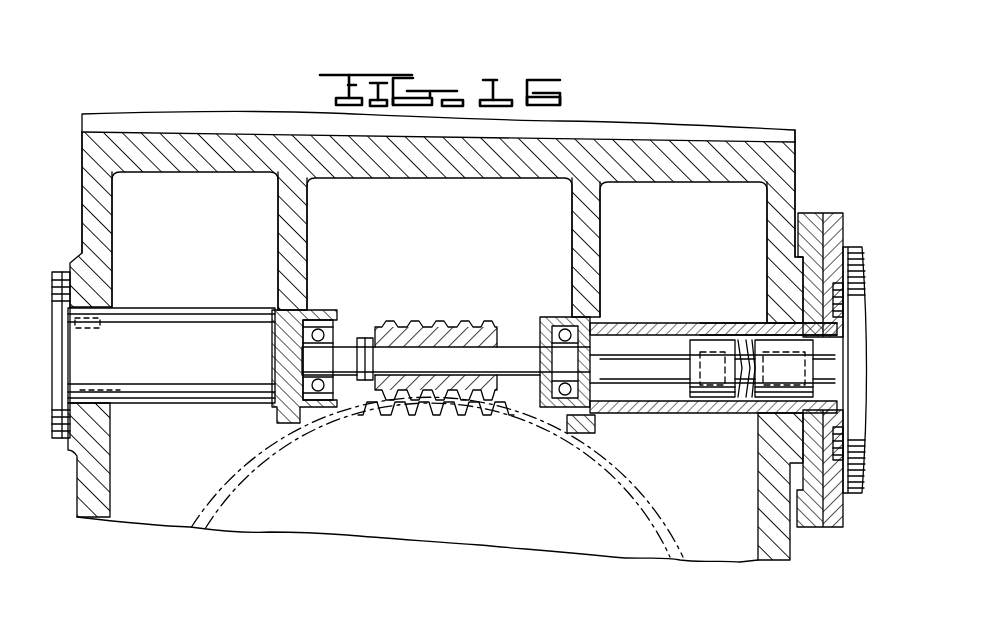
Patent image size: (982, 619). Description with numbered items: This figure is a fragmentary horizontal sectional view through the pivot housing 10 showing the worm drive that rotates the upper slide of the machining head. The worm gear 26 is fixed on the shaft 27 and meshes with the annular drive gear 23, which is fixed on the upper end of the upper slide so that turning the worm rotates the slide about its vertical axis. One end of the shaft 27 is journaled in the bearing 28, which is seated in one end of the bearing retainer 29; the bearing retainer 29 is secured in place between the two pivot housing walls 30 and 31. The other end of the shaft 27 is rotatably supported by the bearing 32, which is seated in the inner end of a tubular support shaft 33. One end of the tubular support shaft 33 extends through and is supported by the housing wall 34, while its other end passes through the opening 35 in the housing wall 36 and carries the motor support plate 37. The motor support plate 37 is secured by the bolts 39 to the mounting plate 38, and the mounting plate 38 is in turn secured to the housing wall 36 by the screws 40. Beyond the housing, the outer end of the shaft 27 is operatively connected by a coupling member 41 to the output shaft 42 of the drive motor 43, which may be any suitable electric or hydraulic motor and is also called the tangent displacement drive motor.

The pivot housing 10 is at (73, 480).
The annular drive gear 23 is at (650, 500).
The worm gear 26 is at (427, 319).
The shaft 27 is at (342, 350).
The bearing 28 is at (315, 327).
The bearing retainer 29 is at (178, 388).
The pivot housing wall 30 is at (103, 282).
The pivot housing wall 31 is at (288, 255).
The bearing 32 is at (590, 317).
The tubular support shaft 33 is at (687, 321).
The housing wall 34 is at (594, 261).
The opening 35 is at (749, 321).
The housing wall 36 is at (788, 181).
The motor support plate 37 is at (845, 209).
The mounting plate 38 is at (807, 530).
The bolts 39 is at (830, 533).
The screws 40 is at (761, 467).
The coupling member 41 is at (711, 393).
The output shaft 42 is at (784, 368).
The drive motor 43 is at (857, 498).